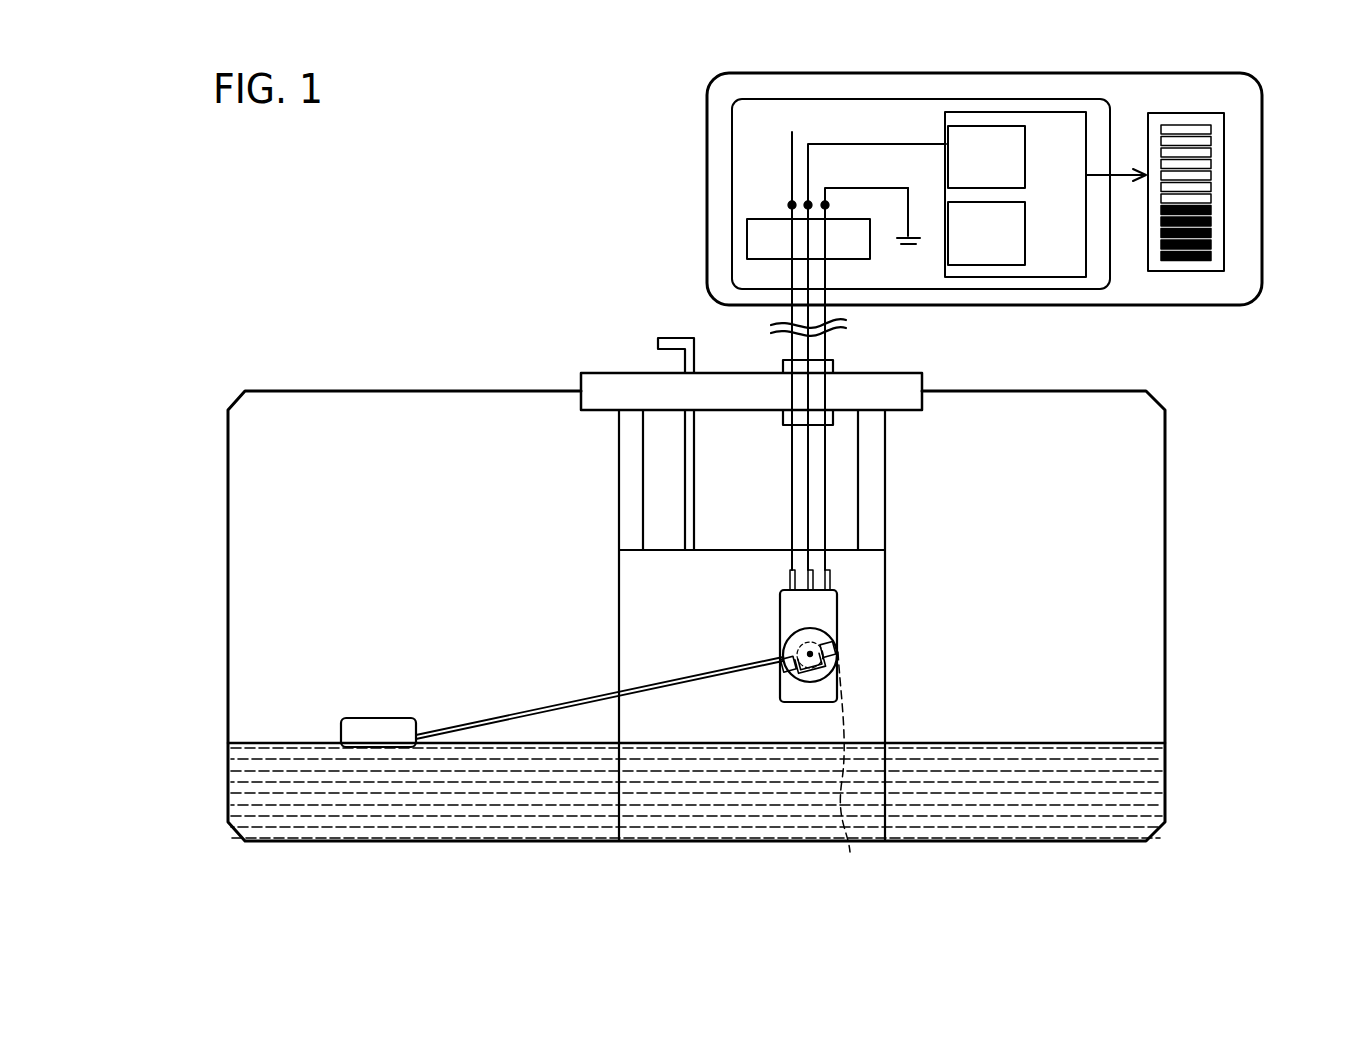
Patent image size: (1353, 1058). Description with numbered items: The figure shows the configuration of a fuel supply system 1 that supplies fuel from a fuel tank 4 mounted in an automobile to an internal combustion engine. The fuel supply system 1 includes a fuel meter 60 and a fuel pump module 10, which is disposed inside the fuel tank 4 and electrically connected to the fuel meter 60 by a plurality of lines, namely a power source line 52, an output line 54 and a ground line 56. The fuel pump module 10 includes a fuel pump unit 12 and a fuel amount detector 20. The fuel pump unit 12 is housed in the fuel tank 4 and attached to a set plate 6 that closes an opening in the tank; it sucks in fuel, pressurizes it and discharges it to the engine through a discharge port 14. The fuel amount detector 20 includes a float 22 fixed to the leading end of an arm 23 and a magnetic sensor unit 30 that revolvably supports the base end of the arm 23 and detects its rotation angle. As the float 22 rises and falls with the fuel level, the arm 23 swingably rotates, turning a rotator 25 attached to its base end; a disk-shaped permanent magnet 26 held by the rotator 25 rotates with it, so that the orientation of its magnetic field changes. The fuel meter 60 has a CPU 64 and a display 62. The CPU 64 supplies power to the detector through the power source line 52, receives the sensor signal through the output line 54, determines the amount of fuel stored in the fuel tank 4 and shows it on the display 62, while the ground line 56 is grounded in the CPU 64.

The fuel supply system 1 is at (545, 255).
The fuel tank 4 is at (1166, 645).
The set plate 6 is at (895, 381).
The fuel pump module 10 is at (612, 617).
The fuel pump unit 12 is at (640, 567).
The discharge port 14 is at (665, 334).
The fuel amount detector 20 is at (845, 640).
The float 22 is at (380, 722).
The arm 23 is at (680, 683).
The rotator 25 is at (807, 682).
The magnet 26 is at (851, 765).
The magnetic sensor unit 30 is at (835, 593).
The power source line 52 is at (790, 478).
The output line 54 is at (808, 463).
The ground line 56 is at (827, 497).
The fuel meter 60 is at (1263, 208).
The display 62 is at (1217, 172).
The CPU 64 is at (1055, 262).